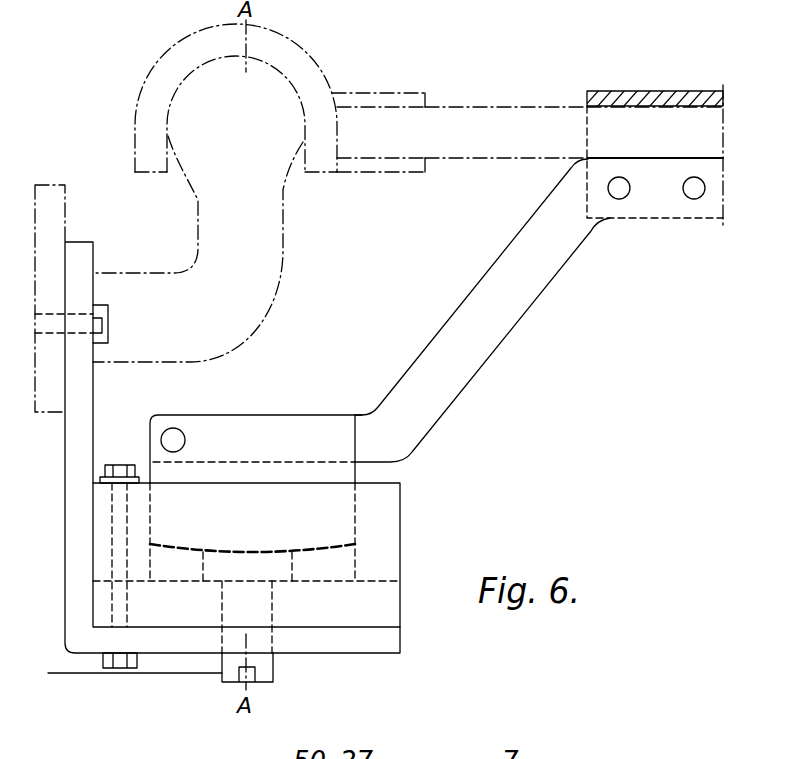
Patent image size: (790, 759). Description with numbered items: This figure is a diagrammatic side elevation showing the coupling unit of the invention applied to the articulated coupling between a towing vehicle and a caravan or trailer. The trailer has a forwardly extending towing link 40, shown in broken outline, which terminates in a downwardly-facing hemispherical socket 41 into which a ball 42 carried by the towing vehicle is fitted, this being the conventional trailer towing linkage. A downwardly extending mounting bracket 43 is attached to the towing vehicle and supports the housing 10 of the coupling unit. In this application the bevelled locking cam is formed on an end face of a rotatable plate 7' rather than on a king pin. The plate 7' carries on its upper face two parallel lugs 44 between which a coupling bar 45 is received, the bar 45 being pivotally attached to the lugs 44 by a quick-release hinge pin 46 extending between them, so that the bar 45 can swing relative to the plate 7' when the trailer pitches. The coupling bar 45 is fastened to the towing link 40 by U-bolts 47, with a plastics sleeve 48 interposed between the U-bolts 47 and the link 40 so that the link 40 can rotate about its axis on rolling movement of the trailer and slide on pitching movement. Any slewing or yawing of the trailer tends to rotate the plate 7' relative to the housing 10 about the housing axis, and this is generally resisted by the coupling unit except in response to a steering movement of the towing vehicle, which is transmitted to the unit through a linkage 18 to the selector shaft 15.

The hemispherical socket 41 is at (273, 67).
The ball 42 is at (270, 145).
The towing link 40 is at (470, 133).
The U-bolts 47 is at (658, 100).
The plastics sleeve 48 is at (650, 162).
The coupling bar 45 is at (422, 397).
The lugs 44 is at (267, 430).
The quick-release hinge pin 46 is at (175, 436).
The mounting bracket 43 is at (85, 393).
The housing 10 is at (385, 550).
The rotatable plate 7' is at (300, 545).
The selector shaft 15 is at (262, 660).
The linkage 18 is at (90, 674).